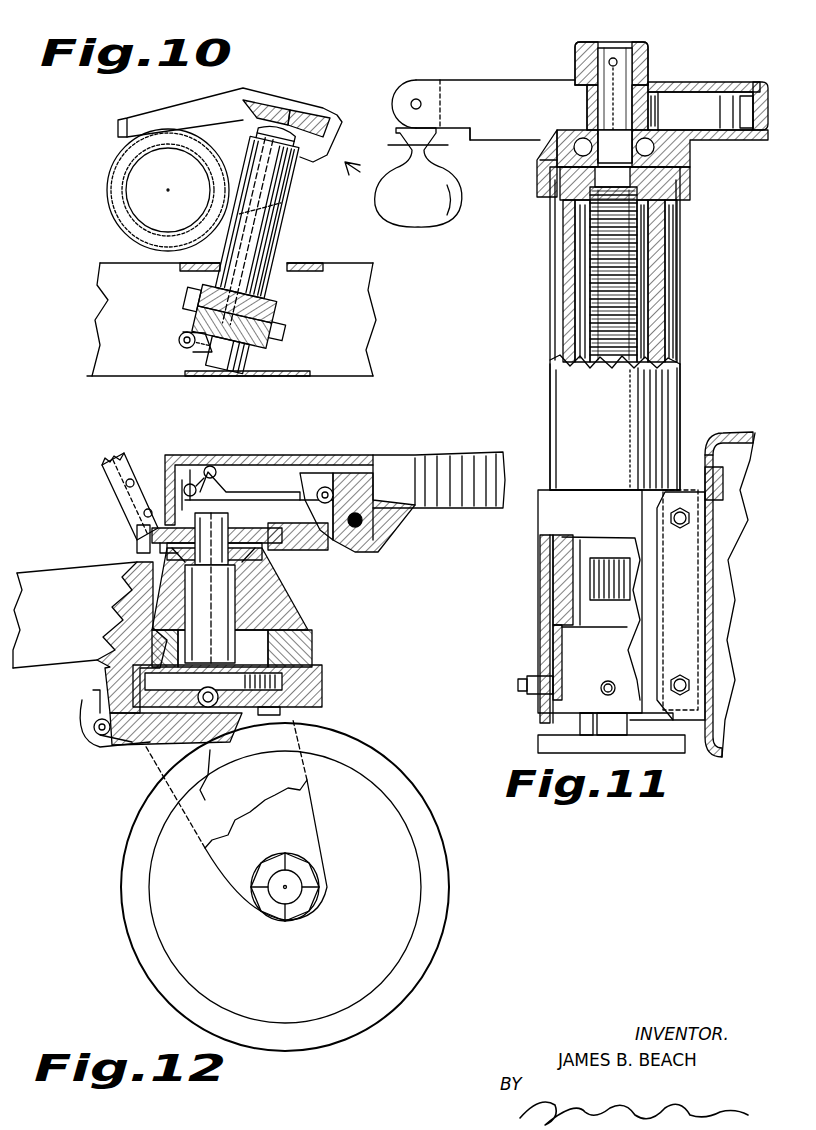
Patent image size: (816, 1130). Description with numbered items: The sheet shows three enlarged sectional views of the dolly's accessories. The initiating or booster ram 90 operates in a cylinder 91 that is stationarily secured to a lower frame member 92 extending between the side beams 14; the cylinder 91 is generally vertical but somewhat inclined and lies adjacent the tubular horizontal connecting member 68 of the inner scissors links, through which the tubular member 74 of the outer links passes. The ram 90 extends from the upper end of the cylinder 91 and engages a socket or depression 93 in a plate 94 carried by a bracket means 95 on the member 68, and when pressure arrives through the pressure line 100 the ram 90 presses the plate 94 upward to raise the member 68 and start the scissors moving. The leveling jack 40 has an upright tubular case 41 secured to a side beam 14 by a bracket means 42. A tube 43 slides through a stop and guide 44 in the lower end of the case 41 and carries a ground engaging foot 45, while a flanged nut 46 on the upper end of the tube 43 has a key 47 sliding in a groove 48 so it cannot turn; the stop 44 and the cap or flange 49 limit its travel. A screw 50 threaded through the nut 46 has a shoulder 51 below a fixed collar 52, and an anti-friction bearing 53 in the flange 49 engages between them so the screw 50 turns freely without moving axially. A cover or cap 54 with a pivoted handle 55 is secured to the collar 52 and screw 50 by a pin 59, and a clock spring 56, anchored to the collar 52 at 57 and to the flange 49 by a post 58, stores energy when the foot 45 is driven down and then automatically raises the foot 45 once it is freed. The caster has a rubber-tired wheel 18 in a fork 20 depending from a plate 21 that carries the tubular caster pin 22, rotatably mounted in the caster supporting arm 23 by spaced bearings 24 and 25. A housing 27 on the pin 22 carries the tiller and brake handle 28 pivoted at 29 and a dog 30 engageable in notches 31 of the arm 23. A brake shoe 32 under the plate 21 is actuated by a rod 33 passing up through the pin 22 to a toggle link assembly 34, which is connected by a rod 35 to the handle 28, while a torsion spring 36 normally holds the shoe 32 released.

In FIG. 10, the side beam 14 is at (112, 325).
In FIG. 11, the side beam 14 is at (753, 432).
In FIG. 12, the rubber-tired wheel 18 is at (438, 912).
In FIG. 12, the fork 20 is at (140, 755).
In FIG. 12, the plate 21 is at (305, 686).
In FIG. 12, the caster shaft or pin 22 is at (215, 600).
In FIG. 12, the caster supporting arm 23 is at (90, 637).
In FIG. 12, the bearing 24 is at (295, 628).
In FIG. 12, the bearing 25 is at (270, 562).
In FIG. 12, the cap or housing 27 is at (300, 455).
In FIG. 12, the tiller and brake handle 28 is at (480, 458).
In FIG. 12, the pivot 29 is at (378, 530).
In FIG. 12, the catch or dog 30 is at (110, 480).
In FIG. 12, the notch 31 is at (145, 553).
In FIG. 12, the brake shoe 32 is at (204, 760).
In FIG. 12, the rod 33 is at (220, 702).
In FIG. 12, the toggle link assembly 34 is at (210, 466).
In FIG. 12, the rod 35 is at (245, 488).
In FIG. 12, the torsion spring 36 is at (92, 705).
In FIG. 11, the leveling jack 40 is at (538, 331).
In FIG. 11, the tubular case 41 is at (615, 427).
In FIG. 11, the bracket means 42 is at (663, 497).
In FIG. 11, the tube 43 is at (560, 580).
In FIG. 11, the stop and guide 44 is at (553, 650).
In FIG. 11, the ground engaging foot 45 is at (542, 740).
In FIG. 11, the flanged nut 46 is at (682, 200).
In FIG. 11, the key 47 is at (678, 232).
In FIG. 11, the groove 48 is at (678, 300).
In FIG. 11, the cap or flange 49 is at (700, 140).
In FIG. 11, the screw 50 is at (592, 258).
In FIG. 11, the flange or shoulder 51 is at (683, 170).
In FIG. 11, the collar 52 is at (585, 62).
In FIG. 11, the anti-friction bearing 53 is at (545, 152).
In FIG. 11, the cover or cap 54 is at (697, 82).
In FIG. 11, the pivoted handle 55 is at (418, 212).
In FIG. 11, the torsion spring or clock spring 56 is at (656, 100).
In FIG. 11, the anchor 57 is at (641, 60).
In FIG. 11, the post or pin 58 is at (753, 82).
In FIG. 11, the pin 59 is at (622, 50).
In FIG. 10, the tubular horizontal connecting member 68 is at (110, 208).
In FIG. 10, the tubular member 74 is at (130, 175).
In FIG. 10, the booster ram or initiating ram 90 is at (262, 132).
In FIG. 10, the cylinder 91 is at (292, 228).
In FIG. 10, the lower frame member 92 is at (282, 356).
In FIG. 10, the socket or depression 93 is at (306, 122).
In FIG. 10, the plate 94 is at (272, 106).
In FIG. 10, the bracket means 95 is at (225, 98).
In FIG. 10, the pressure line 100 is at (180, 343).